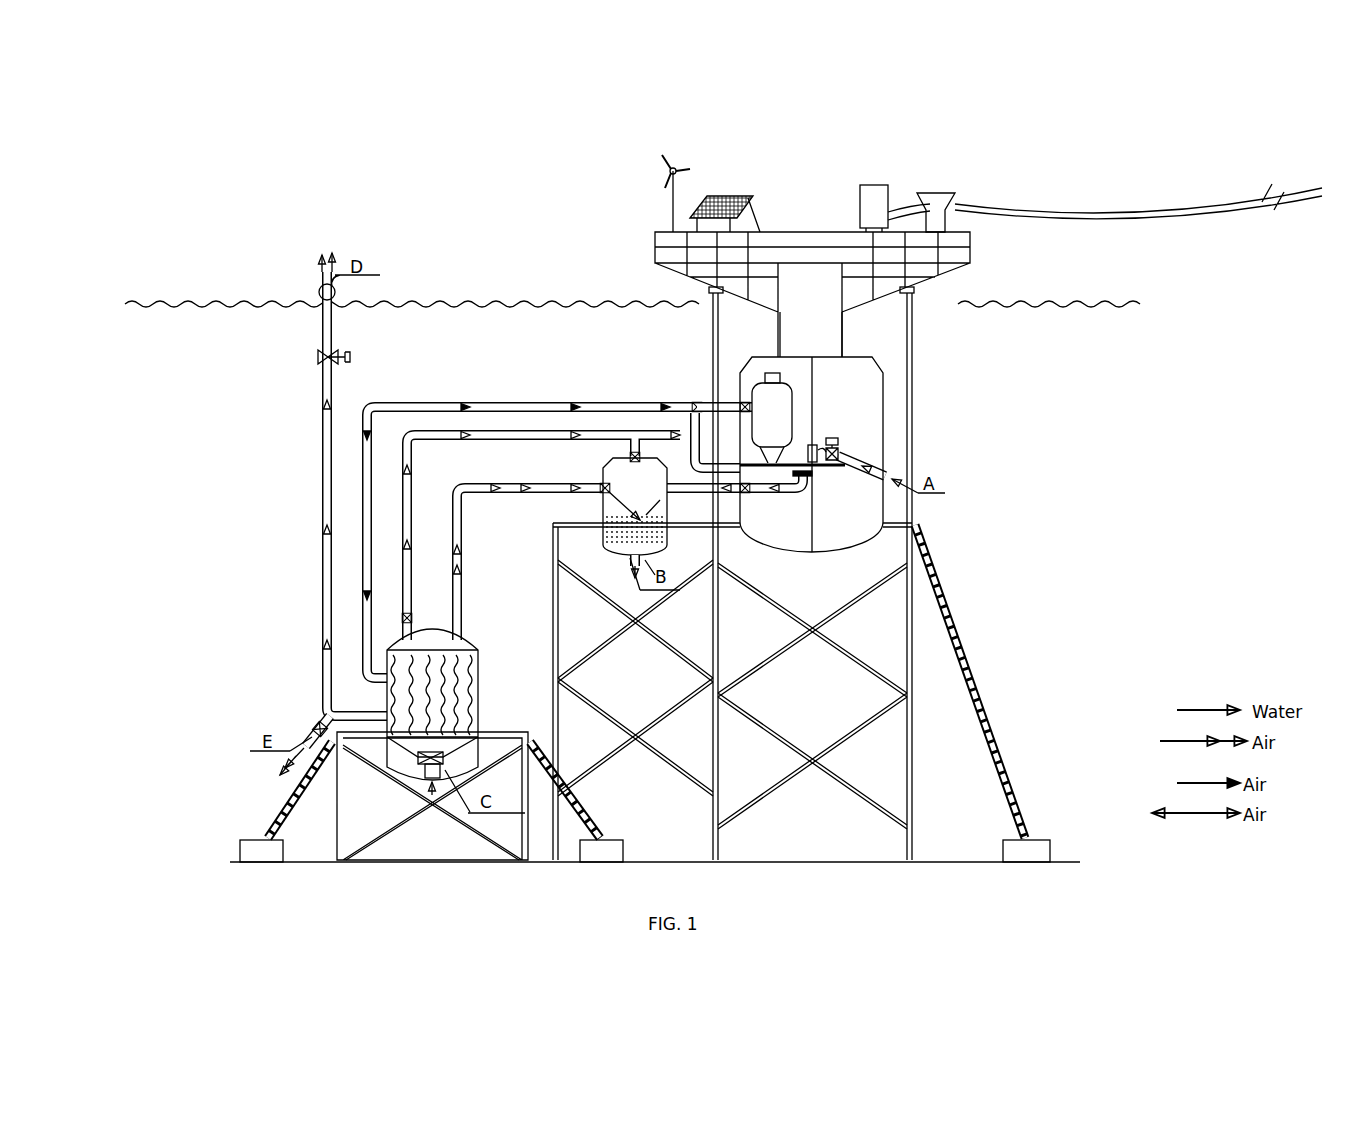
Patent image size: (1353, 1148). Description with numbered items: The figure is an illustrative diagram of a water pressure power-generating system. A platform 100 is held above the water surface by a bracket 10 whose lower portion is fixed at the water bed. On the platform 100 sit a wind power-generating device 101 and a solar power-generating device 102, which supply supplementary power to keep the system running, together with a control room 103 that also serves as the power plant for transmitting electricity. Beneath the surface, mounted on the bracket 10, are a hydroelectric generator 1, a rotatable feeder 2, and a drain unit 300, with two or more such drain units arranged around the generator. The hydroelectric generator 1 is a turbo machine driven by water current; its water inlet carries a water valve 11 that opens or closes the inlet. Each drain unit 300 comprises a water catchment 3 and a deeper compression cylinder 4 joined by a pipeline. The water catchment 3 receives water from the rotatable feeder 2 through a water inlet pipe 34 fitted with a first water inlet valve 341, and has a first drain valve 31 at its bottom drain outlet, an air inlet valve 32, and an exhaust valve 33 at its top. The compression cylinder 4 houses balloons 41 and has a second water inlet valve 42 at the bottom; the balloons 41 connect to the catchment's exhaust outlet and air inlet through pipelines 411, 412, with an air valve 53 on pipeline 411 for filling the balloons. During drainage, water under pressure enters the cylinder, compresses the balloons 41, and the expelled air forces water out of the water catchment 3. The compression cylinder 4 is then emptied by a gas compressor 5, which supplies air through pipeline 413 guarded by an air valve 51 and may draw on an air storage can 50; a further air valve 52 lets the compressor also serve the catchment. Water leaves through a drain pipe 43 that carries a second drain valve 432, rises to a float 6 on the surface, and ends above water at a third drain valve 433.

The hydroelectric generator 1 is at (885, 462).
The rotatable feeder 2 is at (815, 483).
The water catchment 3 is at (650, 519).
The first drain valve 31 is at (660, 529).
The air inlet valve 32 is at (603, 486).
The exhaust valve 33 is at (633, 455).
The water inlet pipe 34 is at (812, 497).
The first water inlet valve 341 is at (752, 497).
The compression cylinder 4 is at (300, 745).
The balloons 41 is at (340, 730).
The second water inlet valve 42 is at (418, 763).
The drain pipe 43 is at (318, 428).
The pipeline 411 is at (397, 459).
The pipeline 412 is at (453, 494).
The pipeline 413 is at (362, 497).
The second drain valve 432 is at (312, 725).
The third drain valve 433 is at (315, 367).
The gas compressor 5 is at (740, 393).
The air storage can 50 is at (795, 388).
The air valve 51 is at (738, 405).
The air valve 52 is at (683, 417).
The air valve 53 is at (398, 619).
The float 6 is at (318, 289).
The bracket 10 is at (915, 757).
The water valve 11 is at (850, 443).
The platform 100 is at (962, 228).
The wind power-generating device 101 is at (660, 173).
The solar power-generating device 102 is at (728, 196).
The control room 103 is at (857, 180).
The drain unit 300 is at (135, 467).